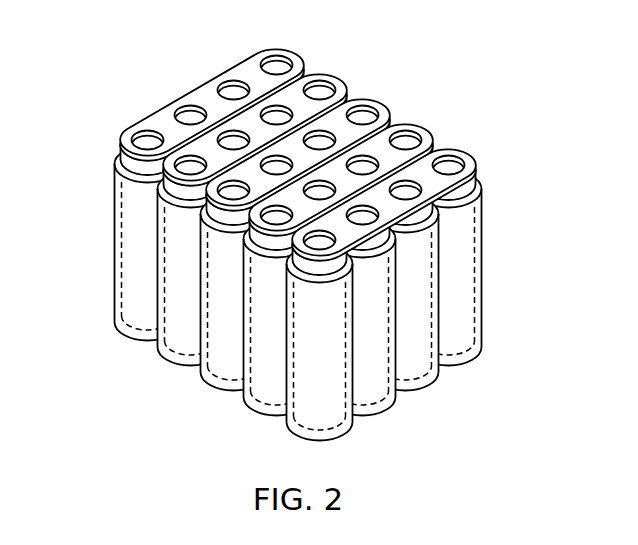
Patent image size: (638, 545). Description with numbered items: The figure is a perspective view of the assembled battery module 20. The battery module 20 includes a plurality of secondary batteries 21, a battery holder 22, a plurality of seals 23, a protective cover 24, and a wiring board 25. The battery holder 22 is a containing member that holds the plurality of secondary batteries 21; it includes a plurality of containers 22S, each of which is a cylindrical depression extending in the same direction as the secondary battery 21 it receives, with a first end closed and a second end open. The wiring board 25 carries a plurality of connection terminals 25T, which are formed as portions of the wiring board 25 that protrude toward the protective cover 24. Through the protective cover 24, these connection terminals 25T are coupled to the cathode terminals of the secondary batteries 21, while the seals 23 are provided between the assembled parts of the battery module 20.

The battery module 20 is at (293, 224).
The secondary battery 21 is at (166, 366).
The battery holder 22 is at (465, 275).
The container 22S is at (130, 183).
The seal 23 is at (488, 185).
The protective cover 24 is at (130, 162).
The wiring board 25 is at (247, 74).
The connection terminal 25T is at (363, 117).